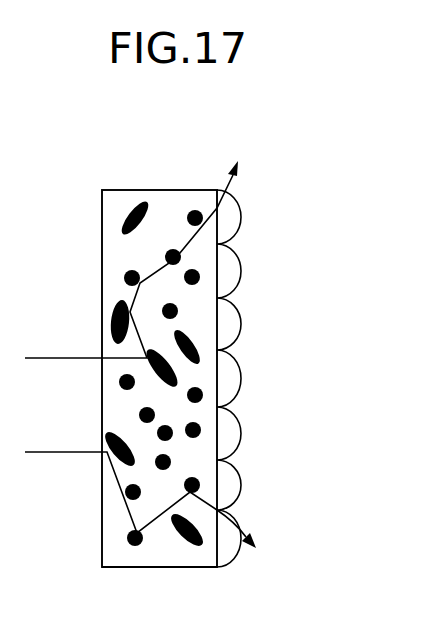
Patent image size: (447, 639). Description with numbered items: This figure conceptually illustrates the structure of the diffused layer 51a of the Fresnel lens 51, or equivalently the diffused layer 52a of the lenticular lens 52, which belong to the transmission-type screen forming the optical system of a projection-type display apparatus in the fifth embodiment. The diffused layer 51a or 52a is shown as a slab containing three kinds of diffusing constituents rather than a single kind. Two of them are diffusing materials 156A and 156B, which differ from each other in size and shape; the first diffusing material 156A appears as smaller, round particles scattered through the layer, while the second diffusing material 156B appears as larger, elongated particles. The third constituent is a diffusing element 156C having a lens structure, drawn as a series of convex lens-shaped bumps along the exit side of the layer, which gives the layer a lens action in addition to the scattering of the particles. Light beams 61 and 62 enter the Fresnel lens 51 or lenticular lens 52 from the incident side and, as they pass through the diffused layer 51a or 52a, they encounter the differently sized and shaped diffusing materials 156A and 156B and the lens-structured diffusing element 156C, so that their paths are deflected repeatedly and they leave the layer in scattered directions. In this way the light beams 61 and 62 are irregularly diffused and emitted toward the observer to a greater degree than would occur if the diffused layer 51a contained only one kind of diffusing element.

The Fresnel lens 51 is at (159, 330).
The lenticular lens 52 is at (163, 158).
The diffused layer 51a is at (159, 592).
The diffused layer 52a is at (168, 553).
The light beam 61 is at (60, 358).
The light beam 62 is at (55, 453).
The diffusing material 156A is at (200, 277).
The diffusing material 156B is at (196, 348).
The diffusing element 156C is at (228, 431).